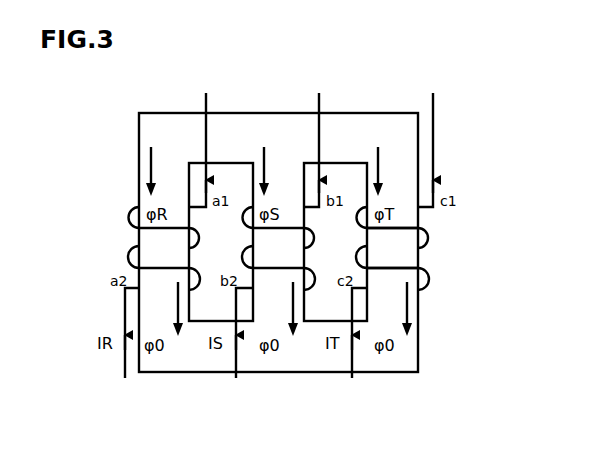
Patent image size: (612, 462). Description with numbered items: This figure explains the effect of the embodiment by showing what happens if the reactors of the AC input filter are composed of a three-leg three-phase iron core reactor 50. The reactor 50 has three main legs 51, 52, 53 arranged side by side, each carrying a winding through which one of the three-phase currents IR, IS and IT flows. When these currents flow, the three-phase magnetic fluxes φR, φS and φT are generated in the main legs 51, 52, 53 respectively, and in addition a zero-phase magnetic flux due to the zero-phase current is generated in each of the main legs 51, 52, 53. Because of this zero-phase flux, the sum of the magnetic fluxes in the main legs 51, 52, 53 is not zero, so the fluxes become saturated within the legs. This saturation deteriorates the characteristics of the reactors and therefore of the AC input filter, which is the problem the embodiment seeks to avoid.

The three-leg three-phase iron core reactor 50 is at (134, 108).
The main leg 51 is at (150, 235).
The main leg 52 is at (293, 236).
The main leg 53 is at (405, 257).